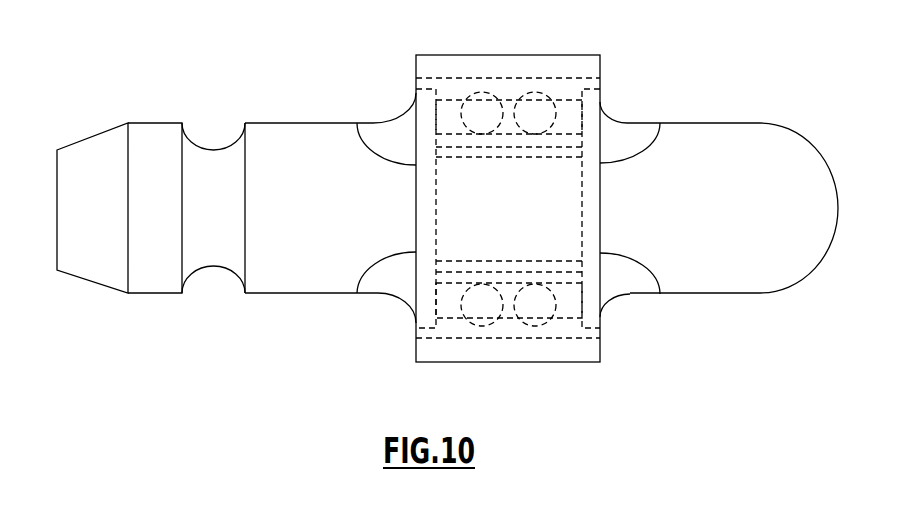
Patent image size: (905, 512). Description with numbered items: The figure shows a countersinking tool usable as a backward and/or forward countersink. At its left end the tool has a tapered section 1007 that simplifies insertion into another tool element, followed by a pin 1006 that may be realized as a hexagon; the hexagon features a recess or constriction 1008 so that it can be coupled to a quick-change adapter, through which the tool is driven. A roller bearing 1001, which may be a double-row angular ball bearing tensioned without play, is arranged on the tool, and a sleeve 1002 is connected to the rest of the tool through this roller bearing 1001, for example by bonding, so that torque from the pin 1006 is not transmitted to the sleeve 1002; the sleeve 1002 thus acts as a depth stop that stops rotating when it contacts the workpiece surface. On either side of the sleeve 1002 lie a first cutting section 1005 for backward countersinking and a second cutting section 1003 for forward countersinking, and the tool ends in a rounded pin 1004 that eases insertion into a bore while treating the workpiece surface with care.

The roller bearing 1001 is at (508, 327).
The sleeve 1002 is at (518, 55).
The second cutting section 1003 is at (625, 108).
The rounded pin 1004 is at (730, 153).
The first cutting section 1005 is at (390, 108).
The pin 1006 is at (317, 278).
The tapered section 1007 is at (97, 133).
The recess or constriction 1008 is at (210, 150).